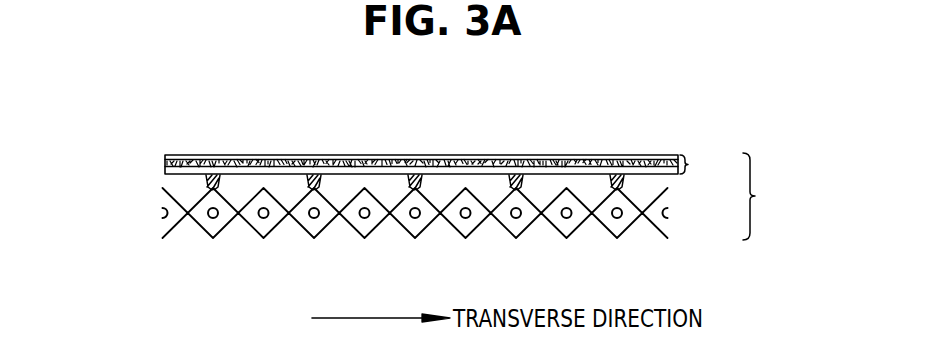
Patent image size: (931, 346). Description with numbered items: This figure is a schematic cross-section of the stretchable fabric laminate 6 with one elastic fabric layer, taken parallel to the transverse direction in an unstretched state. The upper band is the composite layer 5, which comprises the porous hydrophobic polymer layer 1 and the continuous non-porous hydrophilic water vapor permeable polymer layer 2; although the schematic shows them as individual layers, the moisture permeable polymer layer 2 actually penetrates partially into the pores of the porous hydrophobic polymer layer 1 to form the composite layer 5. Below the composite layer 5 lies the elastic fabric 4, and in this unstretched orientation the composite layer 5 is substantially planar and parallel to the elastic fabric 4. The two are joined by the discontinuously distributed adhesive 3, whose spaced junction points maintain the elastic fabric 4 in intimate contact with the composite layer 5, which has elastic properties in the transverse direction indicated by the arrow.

The porous hydrophobic polymer layer 1 is at (473, 155).
The continuous non-porous hydrophilic water vapor permeable polymer layer 2 is at (548, 160).
The discontinuously distributed adhesive 3 is at (227, 182).
The elastic fabric 4 is at (402, 227).
The composite layer 5 is at (692, 166).
The stretchable fabric laminate 6 is at (756, 196).